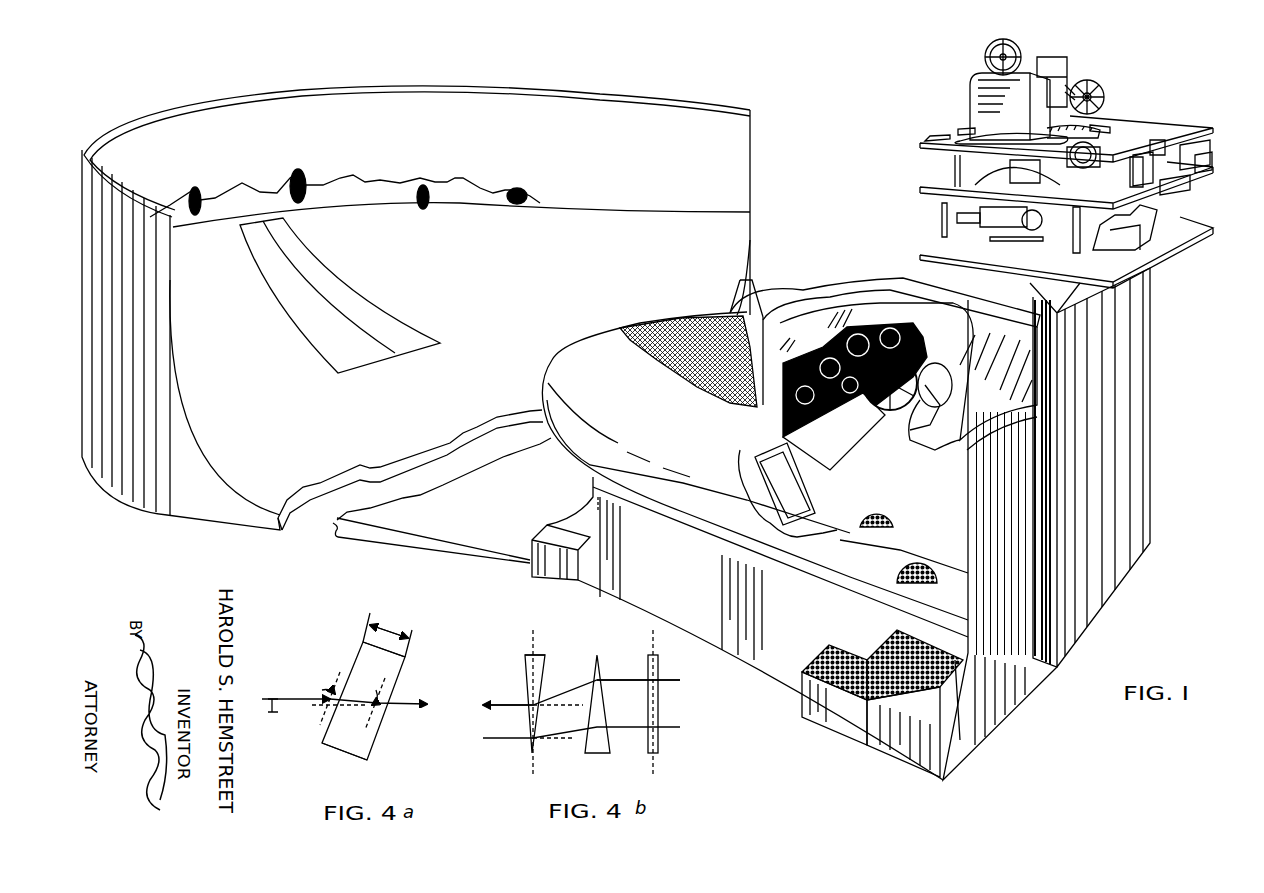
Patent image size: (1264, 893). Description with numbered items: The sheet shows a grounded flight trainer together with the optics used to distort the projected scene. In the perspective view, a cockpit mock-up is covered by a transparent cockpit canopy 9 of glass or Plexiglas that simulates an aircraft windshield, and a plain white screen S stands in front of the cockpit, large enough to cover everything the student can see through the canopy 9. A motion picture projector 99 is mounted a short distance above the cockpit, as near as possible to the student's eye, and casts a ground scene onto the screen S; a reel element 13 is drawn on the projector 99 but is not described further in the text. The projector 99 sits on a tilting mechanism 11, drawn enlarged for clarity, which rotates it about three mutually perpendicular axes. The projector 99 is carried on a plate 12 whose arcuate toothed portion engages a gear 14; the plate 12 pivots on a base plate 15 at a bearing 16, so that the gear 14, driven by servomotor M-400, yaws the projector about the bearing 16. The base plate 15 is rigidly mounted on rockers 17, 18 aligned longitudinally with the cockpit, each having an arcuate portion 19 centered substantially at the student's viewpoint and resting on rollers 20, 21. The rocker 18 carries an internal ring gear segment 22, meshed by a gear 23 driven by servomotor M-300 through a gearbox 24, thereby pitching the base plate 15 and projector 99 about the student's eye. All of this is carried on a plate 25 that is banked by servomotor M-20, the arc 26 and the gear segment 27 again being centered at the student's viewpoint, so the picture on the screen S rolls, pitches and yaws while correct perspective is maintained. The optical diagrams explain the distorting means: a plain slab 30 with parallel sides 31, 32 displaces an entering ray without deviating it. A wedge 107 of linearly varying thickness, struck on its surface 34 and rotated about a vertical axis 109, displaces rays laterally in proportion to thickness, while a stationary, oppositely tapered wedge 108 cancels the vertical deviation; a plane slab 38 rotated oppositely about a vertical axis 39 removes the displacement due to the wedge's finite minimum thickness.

In FIG. 1, the screen S is at (447, 96).
In FIG. 1, the cockpit canopy 9 is at (797, 296).
In FIG. 1, the tilting mechanism 11 is at (1047, 163).
In FIG. 1, the plate 12 is at (920, 143).
In FIG. 1, the film reel 13 is at (1108, 102).
In FIG. 1, the gear 14 is at (1097, 130).
In FIG. 1, the base plate 15 is at (940, 140).
In FIG. 1, the bearing 16 is at (967, 135).
In FIG. 1, the rocker 17 is at (970, 157).
In FIG. 1, the rocker 18 is at (1183, 147).
In FIG. 1, the arcuate portion 19 is at (983, 182).
In FIG. 1, the roller 20 is at (920, 187).
In FIG. 1, the roller 21 is at (953, 197).
In FIG. 1, the gear segment 22 is at (1200, 157).
In FIG. 1, the gear 23 is at (1160, 140).
In FIG. 1, the gearbox 24 is at (1200, 182).
In FIG. 1, the plate 25 is at (980, 197).
In FIG. 1, the arc 26 is at (1163, 212).
In FIG. 1, the gear segment 27 is at (947, 212).
In FIG. 1, the motion picture projector 99 is at (978, 75).
In FIG. 1, the servomotor M-400 is at (1097, 152).
In FIG. 1, the servomotor M-300 is at (1147, 180).
In FIG. 1, the servomotor M-20 is at (1000, 232).
In FIG. 4A, the slab 30 is at (387, 680).
In FIG. 4A, the side 31 is at (353, 640).
In FIG. 4A, the side 32 is at (372, 743).
In FIG. 4B, the surface 34 is at (530, 690).
In FIG. 4B, the slab 38 is at (660, 667).
In FIG. 4B, the vertical axis 39 is at (648, 652).
In FIG. 4B, the prism or wedge 107 is at (532, 672).
In FIG. 4B, the prism or wedge 108 is at (598, 663).
In FIG. 4B, the vertical axis 109 is at (530, 643).